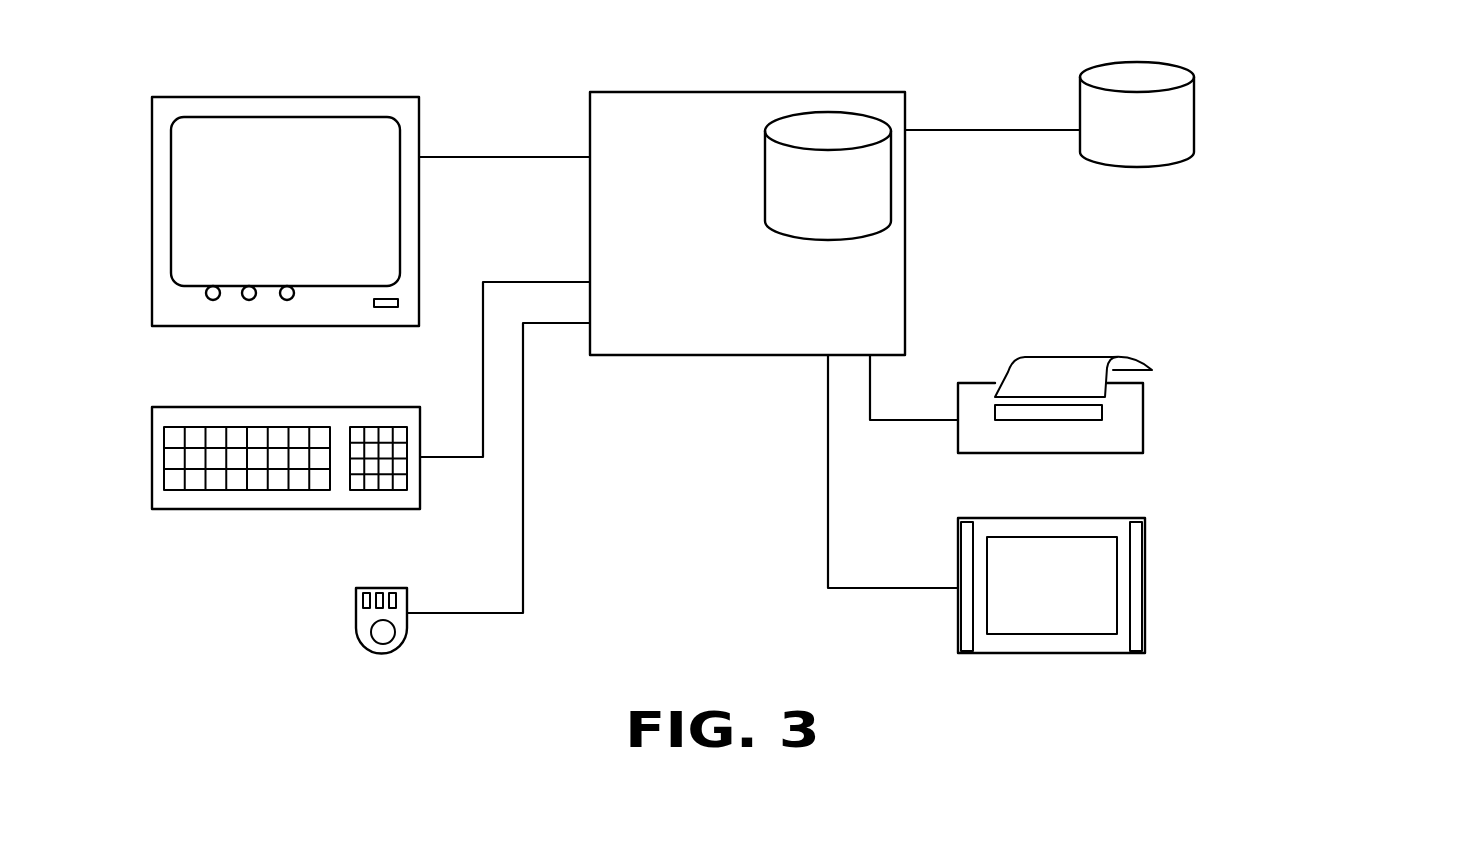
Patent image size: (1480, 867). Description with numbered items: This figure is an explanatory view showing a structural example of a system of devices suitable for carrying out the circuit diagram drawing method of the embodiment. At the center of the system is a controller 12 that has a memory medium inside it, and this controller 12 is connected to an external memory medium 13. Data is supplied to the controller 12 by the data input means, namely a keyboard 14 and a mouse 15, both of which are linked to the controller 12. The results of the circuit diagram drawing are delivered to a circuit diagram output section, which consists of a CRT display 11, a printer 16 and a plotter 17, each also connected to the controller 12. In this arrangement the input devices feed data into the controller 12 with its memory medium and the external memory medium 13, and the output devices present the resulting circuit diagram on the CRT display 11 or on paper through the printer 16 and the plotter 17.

The CRT display 11 is at (299, 97).
The controller 12 is at (753, 92).
The external memory medium 13 is at (1132, 62).
The keyboard 14 is at (302, 407).
The mouse 15 is at (381, 588).
The printer 16 is at (1113, 353).
The plotter 17 is at (1122, 518).